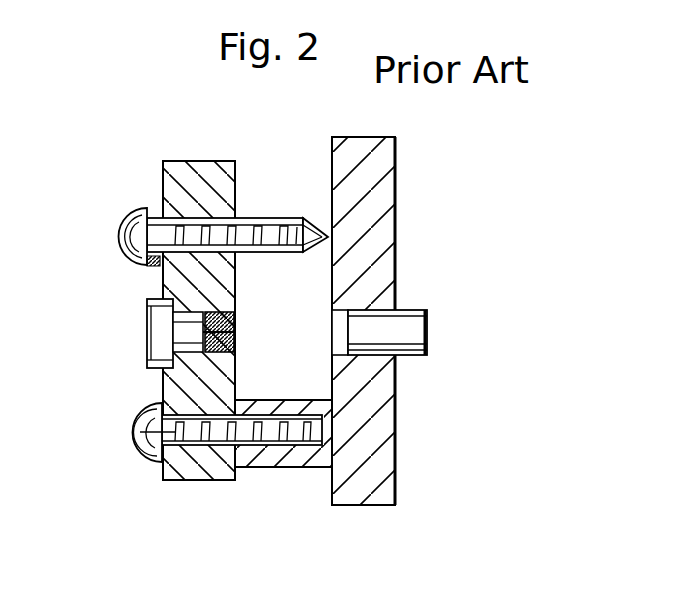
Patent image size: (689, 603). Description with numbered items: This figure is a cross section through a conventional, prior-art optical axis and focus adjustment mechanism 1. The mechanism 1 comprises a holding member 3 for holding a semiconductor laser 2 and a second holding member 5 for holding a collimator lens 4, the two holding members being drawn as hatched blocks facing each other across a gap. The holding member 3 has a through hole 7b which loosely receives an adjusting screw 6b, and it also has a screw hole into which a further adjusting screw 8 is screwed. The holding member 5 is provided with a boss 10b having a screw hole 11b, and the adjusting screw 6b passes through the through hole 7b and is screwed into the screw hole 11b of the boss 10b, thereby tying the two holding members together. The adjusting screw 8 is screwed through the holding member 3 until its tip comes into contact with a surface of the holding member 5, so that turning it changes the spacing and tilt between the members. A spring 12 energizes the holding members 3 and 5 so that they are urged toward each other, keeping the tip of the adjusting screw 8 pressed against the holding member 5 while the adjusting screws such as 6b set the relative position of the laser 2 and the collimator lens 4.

The mechanism 1 is at (508, 172).
The semiconductor laser 2 is at (147, 324).
The holding member 3 is at (200, 176).
The collimator lens 4 is at (410, 309).
The holding member 5 is at (373, 190).
The adjusting screw 6b is at (140, 430).
The through hole 7b is at (198, 482).
The adjusting screw 8 is at (157, 222).
The boss 10b is at (270, 468).
The screw hole 11b is at (268, 427).
The spring 12 is at (153, 265).